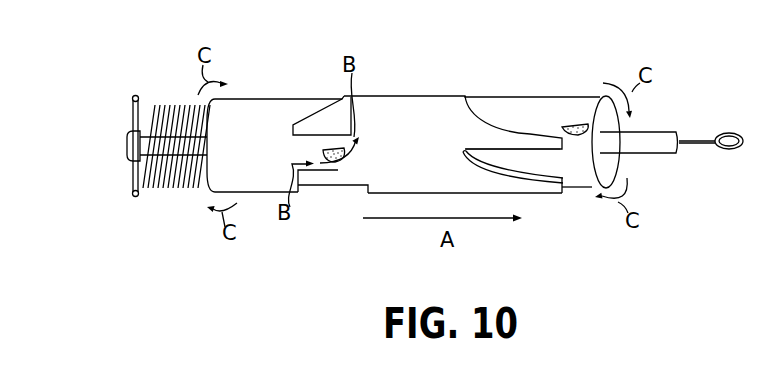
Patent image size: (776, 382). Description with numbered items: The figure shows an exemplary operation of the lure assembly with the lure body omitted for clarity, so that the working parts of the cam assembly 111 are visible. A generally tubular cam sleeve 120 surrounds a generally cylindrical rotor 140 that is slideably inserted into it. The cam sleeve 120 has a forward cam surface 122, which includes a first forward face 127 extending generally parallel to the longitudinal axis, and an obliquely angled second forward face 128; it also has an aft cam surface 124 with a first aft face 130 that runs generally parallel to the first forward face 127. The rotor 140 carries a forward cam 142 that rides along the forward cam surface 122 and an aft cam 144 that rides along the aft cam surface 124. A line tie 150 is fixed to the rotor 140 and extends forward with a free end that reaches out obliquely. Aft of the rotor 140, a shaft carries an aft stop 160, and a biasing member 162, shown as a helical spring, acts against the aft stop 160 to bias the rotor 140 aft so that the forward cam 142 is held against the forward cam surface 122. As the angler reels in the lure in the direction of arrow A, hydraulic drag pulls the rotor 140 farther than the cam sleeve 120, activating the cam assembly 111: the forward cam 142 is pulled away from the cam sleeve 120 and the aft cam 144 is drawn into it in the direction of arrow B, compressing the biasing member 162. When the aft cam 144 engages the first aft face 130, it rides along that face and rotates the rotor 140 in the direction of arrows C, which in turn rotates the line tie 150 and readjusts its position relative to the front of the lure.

The cam assembly 111 is at (418, 95).
The cam sleeve 120 is at (380, 95).
The forward cam surface 122 is at (532, 133).
The aft cam surface 124 is at (318, 135).
The first forward face 127 is at (487, 112).
The second forward face 128 is at (518, 153).
The first aft face 130 is at (337, 171).
The rotor 140 is at (507, 96).
The forward cam 142 is at (574, 123).
The aft cam 144 is at (323, 149).
The line tie 150 is at (700, 138).
The aft stop 160 is at (128, 147).
The biasing member 162 is at (153, 107).